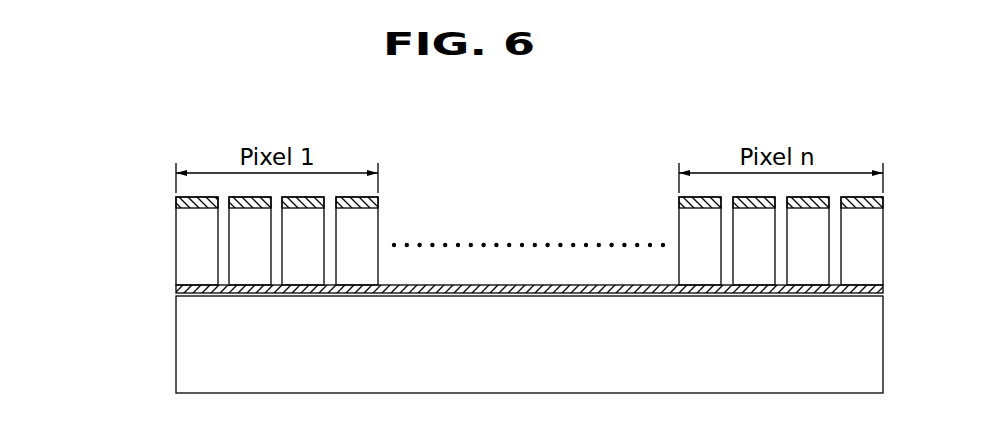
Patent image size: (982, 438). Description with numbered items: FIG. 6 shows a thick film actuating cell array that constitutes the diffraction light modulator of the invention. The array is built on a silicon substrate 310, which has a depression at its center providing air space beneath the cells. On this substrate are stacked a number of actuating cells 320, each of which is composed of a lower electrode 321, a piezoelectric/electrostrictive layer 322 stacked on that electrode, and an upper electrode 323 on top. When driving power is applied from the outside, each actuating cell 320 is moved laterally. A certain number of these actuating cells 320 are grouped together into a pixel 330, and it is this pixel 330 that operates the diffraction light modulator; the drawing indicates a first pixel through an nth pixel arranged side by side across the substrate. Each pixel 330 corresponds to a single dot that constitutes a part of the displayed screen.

The silicon substrate 310 is at (176, 336).
The actuating cell 320 is at (79, 197).
The lower electrode 321 is at (176, 290).
The piezoelectric/electrostrictive layer 322 is at (176, 250).
The upper electrode 323 is at (176, 201).
The pixel 330 is at (438, 135).